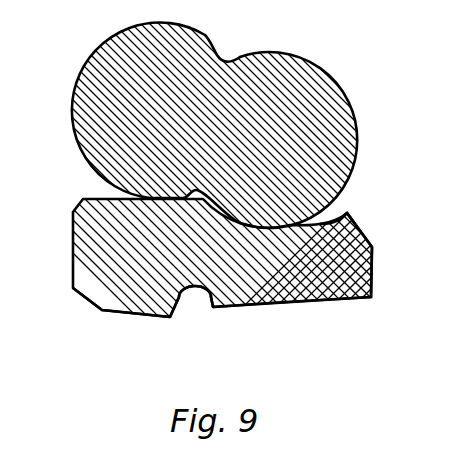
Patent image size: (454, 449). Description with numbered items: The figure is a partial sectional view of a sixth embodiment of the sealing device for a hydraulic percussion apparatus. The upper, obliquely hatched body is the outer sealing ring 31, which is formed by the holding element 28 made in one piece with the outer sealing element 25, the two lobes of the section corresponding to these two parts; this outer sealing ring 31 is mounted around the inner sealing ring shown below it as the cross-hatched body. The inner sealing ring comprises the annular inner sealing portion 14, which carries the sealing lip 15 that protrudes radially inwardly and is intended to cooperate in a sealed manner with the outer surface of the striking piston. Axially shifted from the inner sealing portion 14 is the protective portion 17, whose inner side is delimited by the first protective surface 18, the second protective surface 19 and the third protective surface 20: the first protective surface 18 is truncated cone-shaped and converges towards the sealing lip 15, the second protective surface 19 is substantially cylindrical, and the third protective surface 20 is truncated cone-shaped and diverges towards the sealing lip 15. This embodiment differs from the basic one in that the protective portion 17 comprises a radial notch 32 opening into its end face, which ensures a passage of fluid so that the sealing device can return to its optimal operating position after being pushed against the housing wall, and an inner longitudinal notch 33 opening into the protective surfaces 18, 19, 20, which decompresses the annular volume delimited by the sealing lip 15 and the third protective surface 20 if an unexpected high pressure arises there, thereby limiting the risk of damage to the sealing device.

The inner sealing portion 14 is at (97, 243).
The sealing lip 15 is at (152, 300).
The protective portion 17 is at (345, 222).
The first protective surface 18 is at (327, 307).
The second protective surface 19 is at (240, 308).
The third protective surface 20 is at (207, 305).
The outer sealing element 25 is at (97, 75).
The holding element 28 is at (315, 118).
The outer sealing ring 31 is at (227, 224).
The radial notch 32 is at (369, 240).
The inner longitudinal notch 33 is at (303, 307).